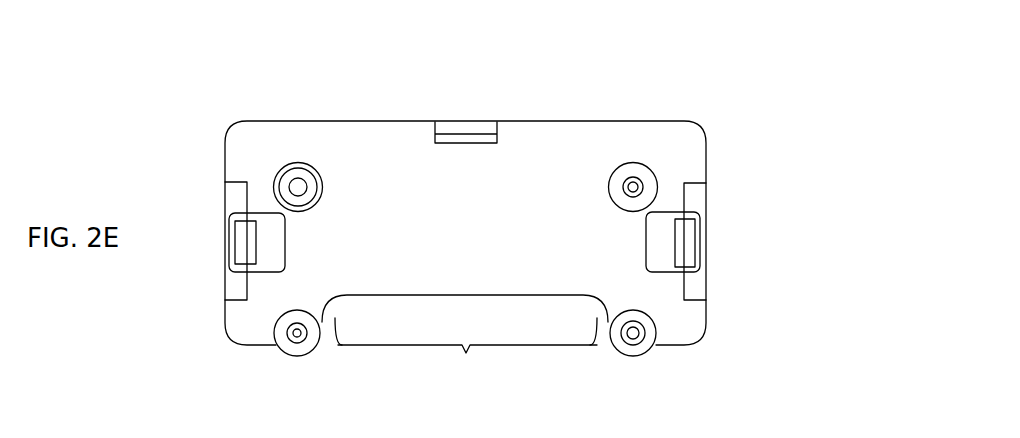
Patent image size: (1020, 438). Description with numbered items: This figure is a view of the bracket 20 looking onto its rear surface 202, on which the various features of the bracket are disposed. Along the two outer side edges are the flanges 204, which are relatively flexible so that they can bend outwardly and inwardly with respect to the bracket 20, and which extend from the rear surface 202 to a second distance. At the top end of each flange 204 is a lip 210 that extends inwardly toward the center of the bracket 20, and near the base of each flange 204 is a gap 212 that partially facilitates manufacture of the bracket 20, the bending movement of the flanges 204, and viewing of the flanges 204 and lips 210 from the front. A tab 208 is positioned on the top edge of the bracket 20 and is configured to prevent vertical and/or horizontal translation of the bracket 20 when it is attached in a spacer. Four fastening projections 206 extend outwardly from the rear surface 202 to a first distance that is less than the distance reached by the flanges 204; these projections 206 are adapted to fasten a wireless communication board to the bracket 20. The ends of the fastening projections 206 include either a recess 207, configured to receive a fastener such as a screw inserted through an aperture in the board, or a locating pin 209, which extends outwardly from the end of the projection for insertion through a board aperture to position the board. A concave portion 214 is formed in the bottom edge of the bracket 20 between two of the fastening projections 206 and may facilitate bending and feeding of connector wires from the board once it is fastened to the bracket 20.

The bracket 20 is at (172, 92).
The rear surface 202 is at (391, 152).
The flanges 204 is at (697, 197).
The fastening projections 206 is at (280, 343).
The recess 207 is at (633, 330).
The tab 208 is at (467, 132).
The locating pin 209 is at (297, 335).
The lips 210 is at (680, 240).
The gaps 212 is at (655, 252).
The concave portion 214 is at (466, 353).